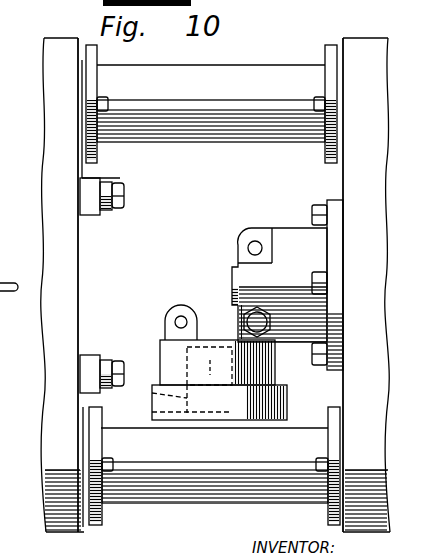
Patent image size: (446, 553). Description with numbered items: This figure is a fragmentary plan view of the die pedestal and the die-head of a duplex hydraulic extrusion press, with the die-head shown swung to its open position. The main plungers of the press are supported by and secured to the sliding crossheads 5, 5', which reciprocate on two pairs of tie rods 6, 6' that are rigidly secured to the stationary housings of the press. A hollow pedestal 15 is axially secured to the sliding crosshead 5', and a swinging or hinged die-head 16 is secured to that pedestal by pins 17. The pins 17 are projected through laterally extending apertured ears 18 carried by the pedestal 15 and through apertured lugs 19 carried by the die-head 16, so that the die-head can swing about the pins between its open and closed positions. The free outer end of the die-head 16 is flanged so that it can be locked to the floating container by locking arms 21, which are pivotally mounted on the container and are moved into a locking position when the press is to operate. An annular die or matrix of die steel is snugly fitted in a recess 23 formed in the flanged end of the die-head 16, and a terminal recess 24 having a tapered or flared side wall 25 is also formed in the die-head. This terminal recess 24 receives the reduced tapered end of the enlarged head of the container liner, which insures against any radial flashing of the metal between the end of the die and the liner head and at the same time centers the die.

The sliding crosshead 5 is at (72, 285).
The sliding crosshead 5' is at (340, 285).
The tie rod 6 is at (209, 108).
The tie rod 6' is at (211, 471).
The hollow pedestal 15 is at (298, 238).
The die-head 16 is at (172, 362).
The pin 17 is at (263, 326).
The apertured ear 18 is at (253, 241).
The apertured lug 19 is at (167, 316).
The locking arm 21 is at (93, 210).
The recess 23 is at (152, 393).
The terminal recess 24 is at (205, 420).
The tapered side wall 25 is at (152, 412).